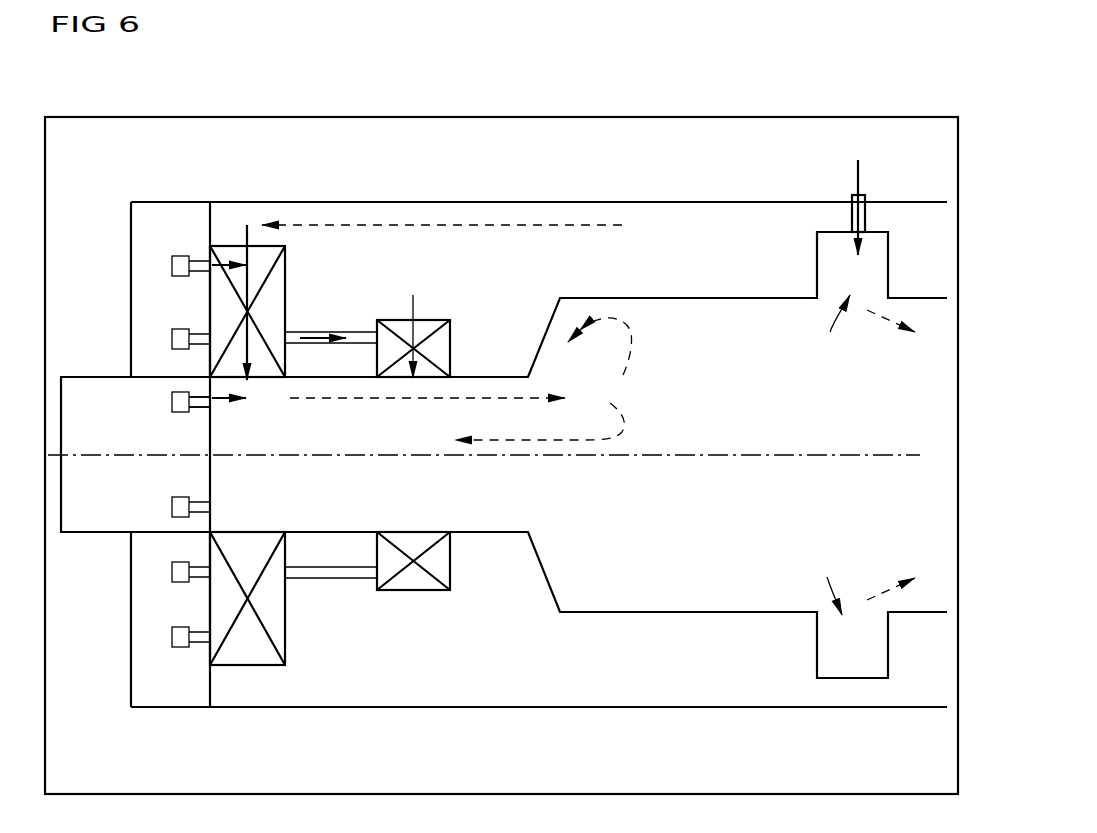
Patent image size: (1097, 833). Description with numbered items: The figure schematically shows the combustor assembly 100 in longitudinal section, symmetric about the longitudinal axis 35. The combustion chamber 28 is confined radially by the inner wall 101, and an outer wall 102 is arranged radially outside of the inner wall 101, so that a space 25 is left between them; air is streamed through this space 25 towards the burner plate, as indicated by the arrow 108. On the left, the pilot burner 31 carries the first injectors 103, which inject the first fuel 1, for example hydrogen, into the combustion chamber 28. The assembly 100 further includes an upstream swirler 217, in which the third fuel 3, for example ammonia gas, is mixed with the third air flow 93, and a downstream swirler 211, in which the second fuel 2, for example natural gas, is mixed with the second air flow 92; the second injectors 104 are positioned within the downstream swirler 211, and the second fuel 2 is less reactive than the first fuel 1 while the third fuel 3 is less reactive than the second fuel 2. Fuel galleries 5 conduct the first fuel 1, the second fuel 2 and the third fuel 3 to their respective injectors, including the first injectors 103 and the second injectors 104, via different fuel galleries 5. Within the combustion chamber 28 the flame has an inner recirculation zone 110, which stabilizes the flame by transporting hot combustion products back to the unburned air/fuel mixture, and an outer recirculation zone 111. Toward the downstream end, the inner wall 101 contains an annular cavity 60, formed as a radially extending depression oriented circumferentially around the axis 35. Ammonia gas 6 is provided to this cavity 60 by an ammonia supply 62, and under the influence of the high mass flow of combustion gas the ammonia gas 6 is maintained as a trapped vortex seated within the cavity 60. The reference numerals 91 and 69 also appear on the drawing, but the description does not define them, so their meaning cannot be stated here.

The combustor assembly 100 is at (825, 97).
The inner wall 101 is at (735, 298).
The outer wall 102 is at (465, 707).
The pilot burner 31 is at (87, 525).
The space 25 is at (680, 261).
The combustion chamber 28 is at (780, 403).
The longitudinal axis 35 is at (845, 455).
The upstream swirler 217 is at (221, 459).
The heat exchanger element 91 is at (170, 311).
The third air flow 93 is at (243, 297).
The fuel galleries 5 is at (172, 266).
The first injectors 103 is at (203, 407).
The third fuel 3 is at (228, 262).
The first fuel 1 is at (222, 403).
The second injectors 104 is at (348, 370).
The arrow 108 is at (555, 225).
The second fuel 2 is at (318, 332).
The second air flow 92 is at (420, 305).
The downstream swirler 211 is at (482, 333).
The outer recirculation zone 111 is at (633, 345).
The inner recirculation zone 110 is at (623, 425).
The ammonia gas 6 is at (855, 170).
The ammonia supply 62 is at (850, 215).
The annular cavity 60 is at (831, 455).
The outlet flow 69 is at (880, 327).